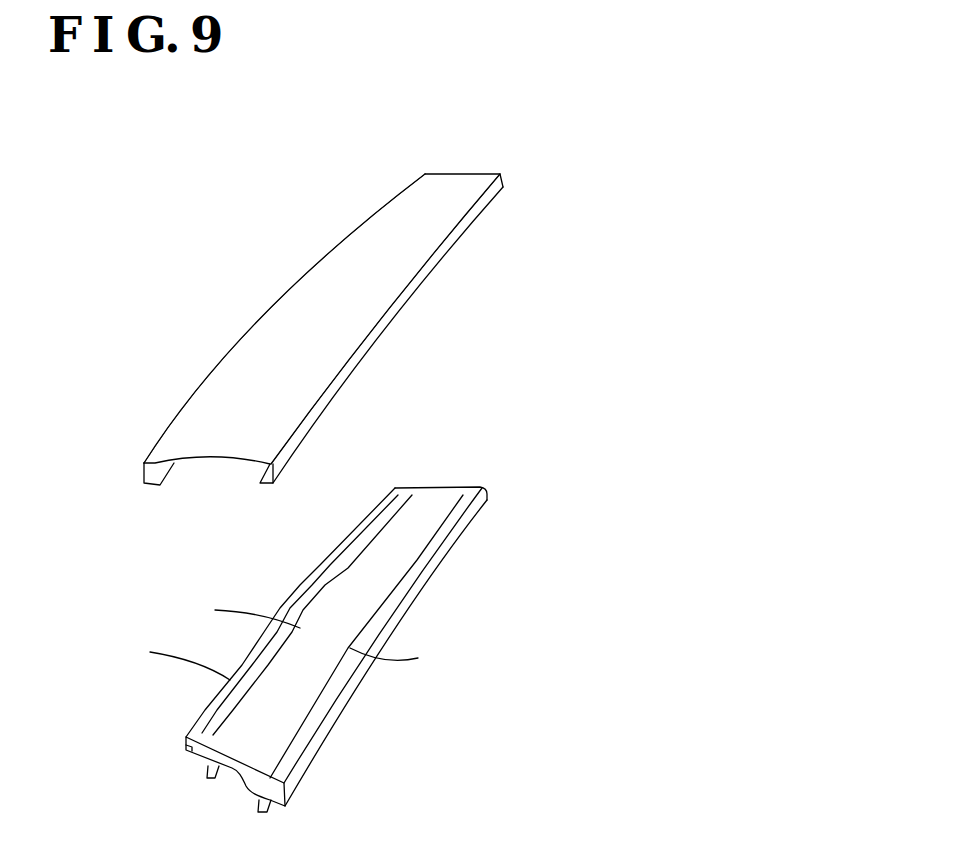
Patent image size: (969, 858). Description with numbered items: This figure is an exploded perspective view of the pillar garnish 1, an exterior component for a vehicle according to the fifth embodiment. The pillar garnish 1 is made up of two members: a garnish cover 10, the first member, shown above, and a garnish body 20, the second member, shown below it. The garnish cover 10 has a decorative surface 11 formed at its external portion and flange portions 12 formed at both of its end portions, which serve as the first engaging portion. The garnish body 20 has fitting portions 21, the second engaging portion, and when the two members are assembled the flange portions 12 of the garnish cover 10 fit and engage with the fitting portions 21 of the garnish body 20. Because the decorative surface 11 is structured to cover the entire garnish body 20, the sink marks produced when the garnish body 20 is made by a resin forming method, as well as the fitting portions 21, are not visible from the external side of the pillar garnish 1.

The pillar garnish 1 is at (582, 173).
The garnish cover 10 is at (435, 190).
The decorative surface 11 is at (325, 295).
The flange portions 12 is at (262, 318).
The garnish body 20 is at (420, 515).
The fitting portions 21 is at (313, 573).